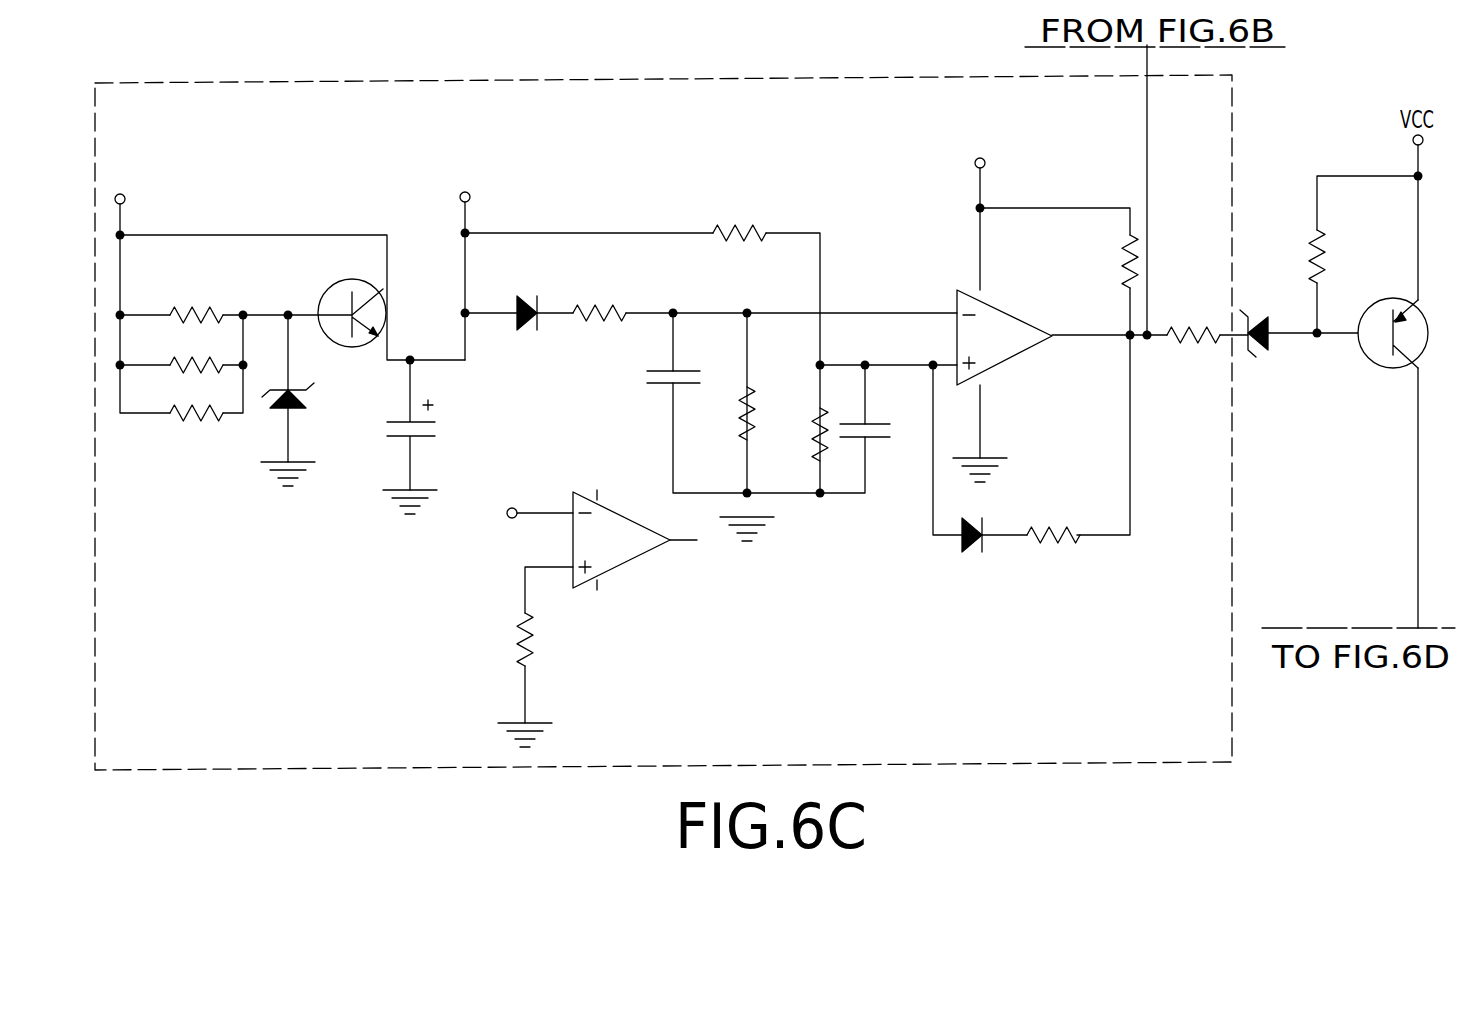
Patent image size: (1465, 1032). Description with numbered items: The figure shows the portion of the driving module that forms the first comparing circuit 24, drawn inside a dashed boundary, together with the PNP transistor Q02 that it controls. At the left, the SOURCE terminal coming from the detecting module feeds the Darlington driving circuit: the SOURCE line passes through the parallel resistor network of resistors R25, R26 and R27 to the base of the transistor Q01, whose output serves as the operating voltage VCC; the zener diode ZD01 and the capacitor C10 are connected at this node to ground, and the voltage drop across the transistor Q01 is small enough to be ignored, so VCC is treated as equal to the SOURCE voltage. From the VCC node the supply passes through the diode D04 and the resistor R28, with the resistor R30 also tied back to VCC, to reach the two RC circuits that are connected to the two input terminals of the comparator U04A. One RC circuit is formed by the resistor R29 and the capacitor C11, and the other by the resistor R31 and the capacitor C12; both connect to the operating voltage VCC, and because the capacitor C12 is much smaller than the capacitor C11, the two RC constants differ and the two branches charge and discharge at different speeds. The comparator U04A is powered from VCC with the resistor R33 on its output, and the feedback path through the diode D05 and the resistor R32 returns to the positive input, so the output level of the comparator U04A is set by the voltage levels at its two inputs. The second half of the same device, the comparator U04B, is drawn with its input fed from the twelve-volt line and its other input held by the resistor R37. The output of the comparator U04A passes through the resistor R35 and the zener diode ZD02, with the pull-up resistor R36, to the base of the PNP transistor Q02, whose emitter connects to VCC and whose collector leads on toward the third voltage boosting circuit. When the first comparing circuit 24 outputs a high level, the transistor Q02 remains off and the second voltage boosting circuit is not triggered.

The first comparing circuit 24 is at (492, 88).
The resistor R25 is at (180, 287).
The resistor R26 is at (180, 357).
The resistor R27 is at (174, 443).
The transistor Q01 is at (388, 294).
The zener diode ZD01 is at (288, 444).
The capacitor C10 is at (383, 437).
The diode D04 is at (534, 348).
The resistor R28 is at (599, 281).
The resistor R30 is at (739, 201).
The capacitor C11 is at (652, 417).
The resistor R29 is at (717, 434).
The resistor R31 is at (806, 493).
The capacitor C12 is at (874, 491).
The comparator U04A is at (1004, 328).
The resistor R33 is at (1104, 268).
The resistor R35 is at (1192, 371).
The resistor R32 is at (1060, 569).
The diode D05 is at (967, 573).
The comparator U04B is at (614, 559).
The resistor R37 is at (557, 662).
The resistor R36 is at (1288, 237).
The zener diode ZD02 is at (1262, 372).
The PNP transistor Q02 is at (1385, 359).